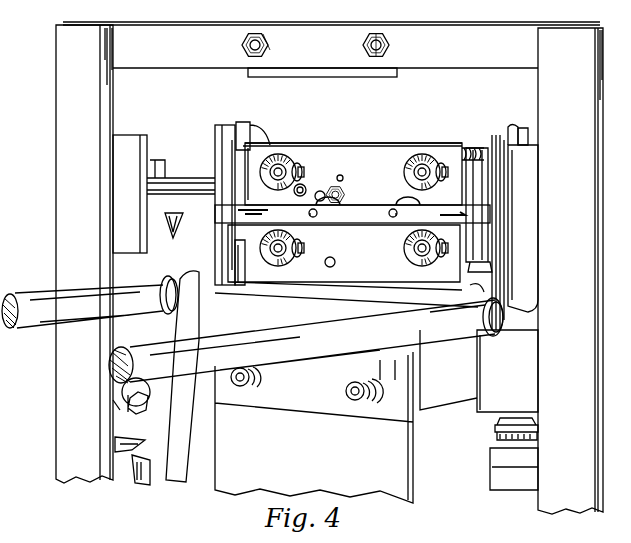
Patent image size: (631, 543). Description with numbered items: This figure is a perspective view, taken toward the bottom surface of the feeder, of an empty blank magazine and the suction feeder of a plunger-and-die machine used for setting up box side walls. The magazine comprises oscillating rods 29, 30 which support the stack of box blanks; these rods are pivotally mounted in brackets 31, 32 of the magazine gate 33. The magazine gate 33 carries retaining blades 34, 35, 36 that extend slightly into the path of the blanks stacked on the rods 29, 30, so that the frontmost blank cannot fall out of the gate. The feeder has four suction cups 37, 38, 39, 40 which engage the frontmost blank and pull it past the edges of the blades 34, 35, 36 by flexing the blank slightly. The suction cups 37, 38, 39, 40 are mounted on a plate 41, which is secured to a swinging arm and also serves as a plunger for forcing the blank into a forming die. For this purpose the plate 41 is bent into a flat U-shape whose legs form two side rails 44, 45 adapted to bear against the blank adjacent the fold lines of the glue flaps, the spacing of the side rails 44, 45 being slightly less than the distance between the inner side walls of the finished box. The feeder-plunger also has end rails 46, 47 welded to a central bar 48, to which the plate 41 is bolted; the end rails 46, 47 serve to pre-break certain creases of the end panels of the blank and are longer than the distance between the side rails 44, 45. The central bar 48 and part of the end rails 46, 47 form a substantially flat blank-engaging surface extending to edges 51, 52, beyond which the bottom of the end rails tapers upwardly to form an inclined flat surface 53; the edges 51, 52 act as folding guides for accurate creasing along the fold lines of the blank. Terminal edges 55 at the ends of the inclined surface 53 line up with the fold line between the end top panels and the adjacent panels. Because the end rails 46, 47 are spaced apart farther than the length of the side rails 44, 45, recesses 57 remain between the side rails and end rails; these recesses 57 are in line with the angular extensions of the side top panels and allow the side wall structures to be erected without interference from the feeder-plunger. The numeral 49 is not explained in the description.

The oscillating rod 29 is at (43, 298).
The oscillating rod 30 is at (224, 338).
The bracket 31 is at (147, 335).
The bracket 32 is at (515, 361).
The magazine gate 33 is at (470, 53).
The retaining blade 34 is at (136, 198).
The retaining blade 35 is at (329, 78).
The retaining blade 36 is at (525, 219).
The suction cup 37 is at (295, 178).
The suction cup 38 is at (298, 257).
The suction cup 39 is at (405, 172).
The suction cup 40 is at (406, 250).
The plate 41 is at (382, 191).
The side rail 44 is at (357, 147).
The side rail 45 is at (348, 286).
The end rail 46 is at (221, 230).
The end rail 47 is at (492, 198).
The central bar 48 is at (356, 221).
The slots 49 is at (313, 223).
The edge 51 is at (215, 136).
The edge 52 is at (497, 136).
The inclined flat surface 53 is at (510, 130).
The terminal edge 55 is at (521, 135).
The recess 57 is at (241, 138).